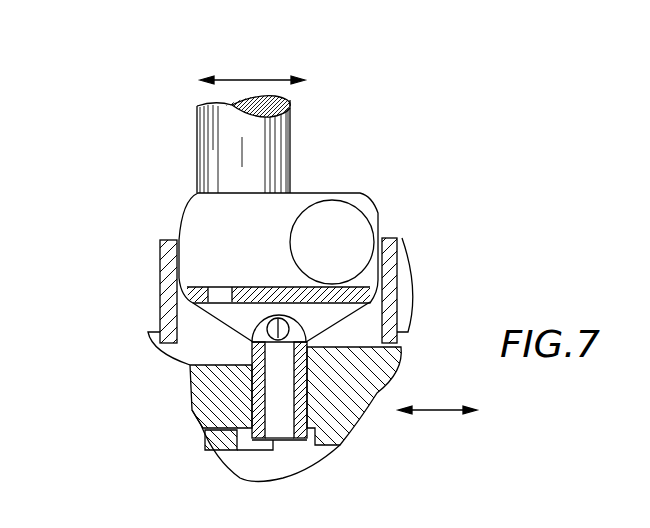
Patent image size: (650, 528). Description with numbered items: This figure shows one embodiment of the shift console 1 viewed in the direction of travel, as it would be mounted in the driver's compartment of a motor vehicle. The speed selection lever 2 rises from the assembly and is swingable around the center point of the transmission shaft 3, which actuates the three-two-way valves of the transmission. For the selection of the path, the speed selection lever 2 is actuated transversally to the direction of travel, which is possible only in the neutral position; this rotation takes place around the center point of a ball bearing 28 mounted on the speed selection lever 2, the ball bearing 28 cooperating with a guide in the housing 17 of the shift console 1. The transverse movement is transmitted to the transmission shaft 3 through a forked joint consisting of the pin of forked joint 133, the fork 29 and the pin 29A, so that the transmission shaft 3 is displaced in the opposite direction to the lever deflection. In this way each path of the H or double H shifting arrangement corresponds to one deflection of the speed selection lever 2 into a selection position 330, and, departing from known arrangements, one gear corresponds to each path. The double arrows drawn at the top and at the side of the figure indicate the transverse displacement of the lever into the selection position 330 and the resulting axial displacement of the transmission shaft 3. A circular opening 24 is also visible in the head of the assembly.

The shift console 1 is at (128, 371).
The speed selection lever 2 is at (260, 157).
The transmission shaft 3 is at (378, 370).
The housing 17 is at (397, 342).
The bore in head 24 is at (334, 228).
The ball bearing 28 is at (183, 224).
The fork 29 is at (235, 313).
The pin 29A is at (255, 377).
The pin of forked joint 133 is at (305, 398).
The selection position 330 is at (248, 80).